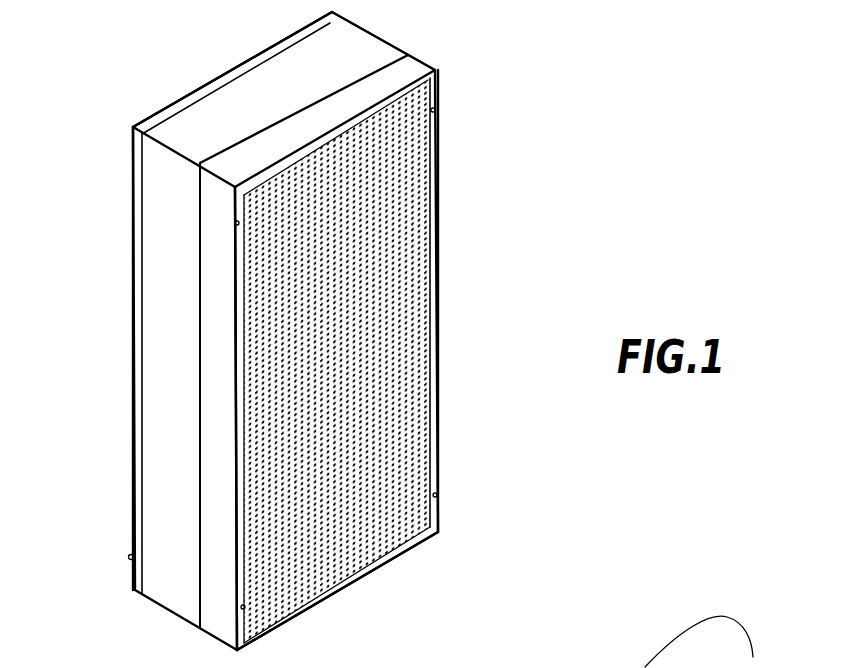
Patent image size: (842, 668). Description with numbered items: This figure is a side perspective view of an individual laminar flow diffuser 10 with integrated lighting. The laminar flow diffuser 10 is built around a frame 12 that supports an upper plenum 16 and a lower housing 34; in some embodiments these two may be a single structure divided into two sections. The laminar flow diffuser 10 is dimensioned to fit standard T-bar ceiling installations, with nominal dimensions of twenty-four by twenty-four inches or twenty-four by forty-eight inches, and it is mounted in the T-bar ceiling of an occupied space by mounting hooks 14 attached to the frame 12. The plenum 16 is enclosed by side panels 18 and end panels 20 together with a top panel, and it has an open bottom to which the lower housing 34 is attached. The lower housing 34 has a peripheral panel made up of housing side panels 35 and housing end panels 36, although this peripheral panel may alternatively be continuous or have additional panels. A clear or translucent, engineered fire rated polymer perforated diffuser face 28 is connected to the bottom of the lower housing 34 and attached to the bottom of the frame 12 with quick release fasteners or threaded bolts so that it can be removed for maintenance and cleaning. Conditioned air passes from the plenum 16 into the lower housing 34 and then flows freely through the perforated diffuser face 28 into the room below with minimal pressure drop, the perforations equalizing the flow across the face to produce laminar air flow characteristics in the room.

The laminar flow diffuser 10 is at (539, 197).
The frame 12 is at (397, 559).
The mounting hooks 14 is at (124, 144).
The plenum 16 is at (373, 31).
The side panels 18 is at (167, 513).
The end panels 20 is at (187, 118).
The perforated diffuser face 28 is at (310, 527).
The lower housing 34 is at (423, 57).
The housing side panels 35 is at (227, 613).
The housing end panels 36 is at (247, 157).